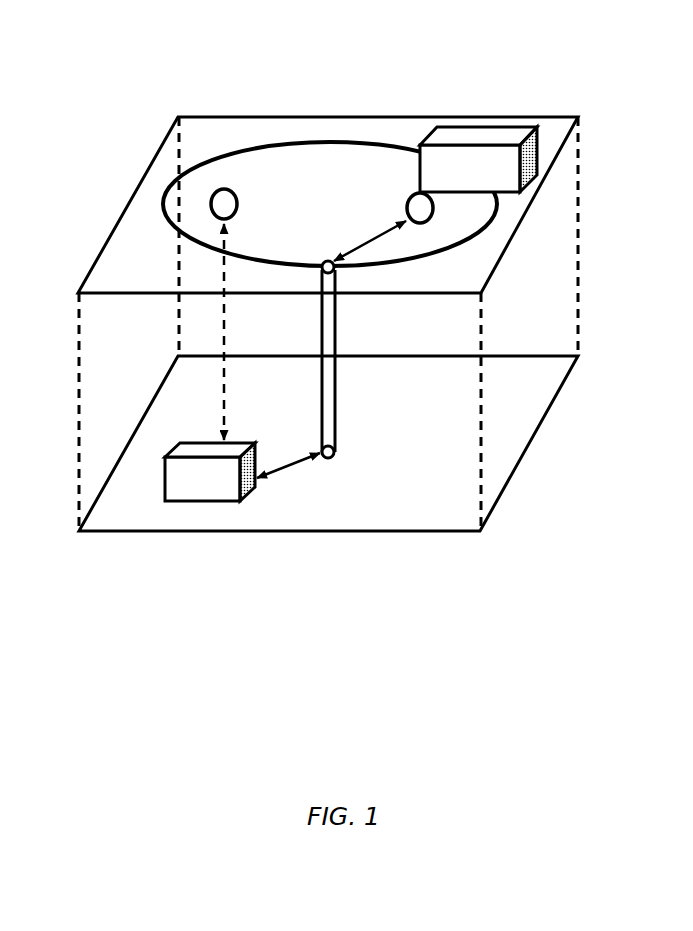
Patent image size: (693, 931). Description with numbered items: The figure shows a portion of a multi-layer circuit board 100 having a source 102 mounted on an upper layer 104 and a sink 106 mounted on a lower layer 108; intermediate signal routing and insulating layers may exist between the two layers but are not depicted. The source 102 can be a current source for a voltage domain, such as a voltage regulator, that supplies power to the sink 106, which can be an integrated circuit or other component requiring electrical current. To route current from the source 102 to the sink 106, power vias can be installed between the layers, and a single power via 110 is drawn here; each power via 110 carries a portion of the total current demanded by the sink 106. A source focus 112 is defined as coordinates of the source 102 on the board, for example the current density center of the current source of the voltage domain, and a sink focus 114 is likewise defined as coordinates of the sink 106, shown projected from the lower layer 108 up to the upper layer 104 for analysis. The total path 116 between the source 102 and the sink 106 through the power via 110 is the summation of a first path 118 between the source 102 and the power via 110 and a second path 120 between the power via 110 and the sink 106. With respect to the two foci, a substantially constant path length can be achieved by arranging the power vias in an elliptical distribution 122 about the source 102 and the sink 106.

The multi-layer circuit board 100 is at (348, 58).
The source 102 is at (511, 128).
The upper layer 104 is at (230, 132).
The sink 106 is at (205, 502).
The lower layer 108 is at (443, 532).
The power via 110 is at (337, 428).
The source focus 112 is at (410, 198).
The sink focus 114 is at (238, 198).
The total path 116 is at (348, 308).
The first path 118 is at (373, 237).
The second path 120 is at (277, 472).
The elliptical distribution 122 is at (168, 185).